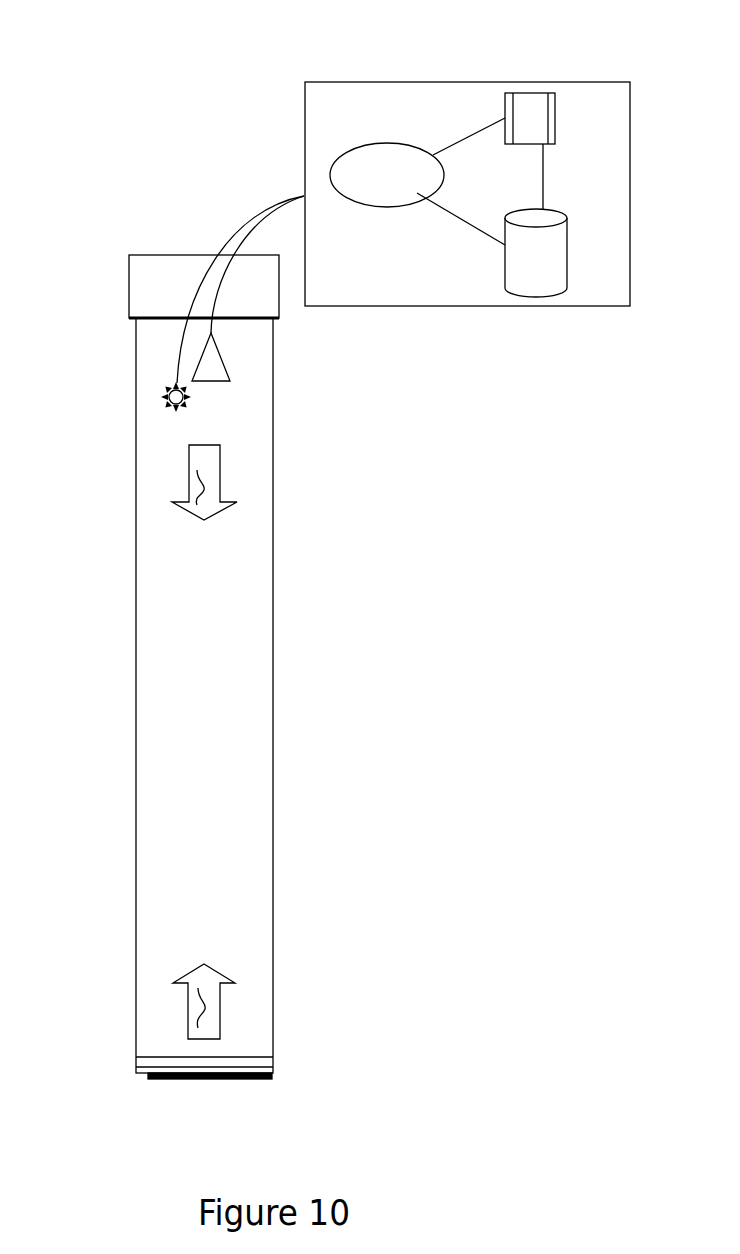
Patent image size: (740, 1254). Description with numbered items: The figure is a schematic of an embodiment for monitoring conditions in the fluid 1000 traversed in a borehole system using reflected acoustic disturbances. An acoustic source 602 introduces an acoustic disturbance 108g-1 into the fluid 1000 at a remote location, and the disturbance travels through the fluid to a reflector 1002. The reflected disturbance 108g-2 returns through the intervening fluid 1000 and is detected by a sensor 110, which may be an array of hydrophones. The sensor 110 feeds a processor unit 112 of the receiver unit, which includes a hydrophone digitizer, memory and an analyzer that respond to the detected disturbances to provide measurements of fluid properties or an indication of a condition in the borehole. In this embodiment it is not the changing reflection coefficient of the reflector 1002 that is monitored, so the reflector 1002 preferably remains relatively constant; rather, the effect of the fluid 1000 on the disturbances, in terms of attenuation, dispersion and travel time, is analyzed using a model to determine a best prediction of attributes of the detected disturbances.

The processor unit 112 is at (467, 181).
The fluid 1000 is at (235, 670).
The acoustic source 602 is at (168, 389).
The sensor 110 is at (225, 363).
The acoustic disturbance 108g-1 is at (222, 457).
The reflected disturbance 108g-2 is at (222, 1007).
The reflector 1002 is at (248, 1055).